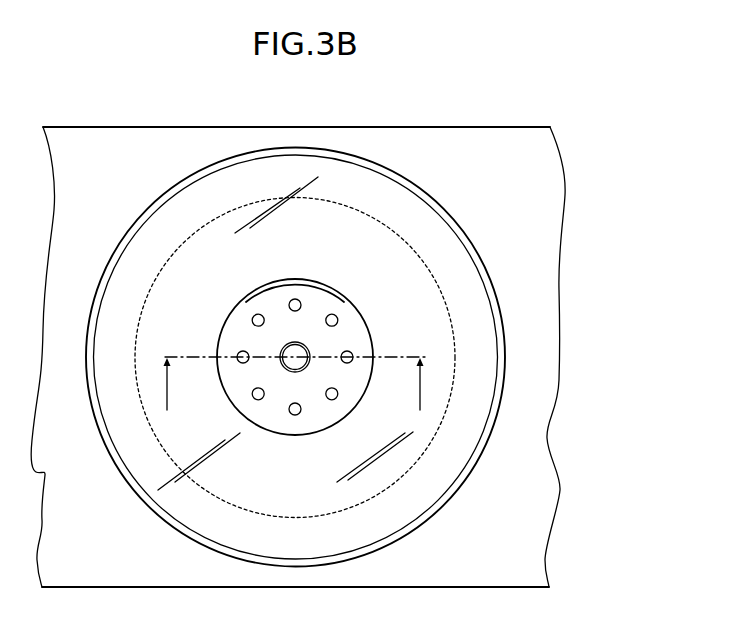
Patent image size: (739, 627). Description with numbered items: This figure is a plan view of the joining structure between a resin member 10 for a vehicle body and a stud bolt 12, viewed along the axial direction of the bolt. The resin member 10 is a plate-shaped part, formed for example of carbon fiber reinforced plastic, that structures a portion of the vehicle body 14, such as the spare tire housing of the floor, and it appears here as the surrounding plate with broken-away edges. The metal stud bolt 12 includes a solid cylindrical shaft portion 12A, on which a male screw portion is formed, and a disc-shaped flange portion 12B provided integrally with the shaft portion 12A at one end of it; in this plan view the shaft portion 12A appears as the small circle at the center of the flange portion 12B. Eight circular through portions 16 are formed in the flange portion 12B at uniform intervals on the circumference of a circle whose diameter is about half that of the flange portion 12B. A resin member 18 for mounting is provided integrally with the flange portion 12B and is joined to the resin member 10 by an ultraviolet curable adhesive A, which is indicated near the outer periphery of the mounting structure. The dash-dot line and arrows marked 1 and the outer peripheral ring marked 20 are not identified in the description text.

The section line direction 1 is at (294, 395).
The resin member for a vehicle body 10 is at (354, 338).
The vehicle body 14 is at (540, 145).
The stud bolt 12 is at (312, 400).
The shaft portion 12A is at (310, 347).
The flange portion 12B is at (318, 297).
The through portions 16 is at (251, 316).
The resin member for mounting 18 is at (442, 247).
The outer peripheral edge 20 is at (394, 147).
The ultraviolet curable adhesive A is at (432, 199).